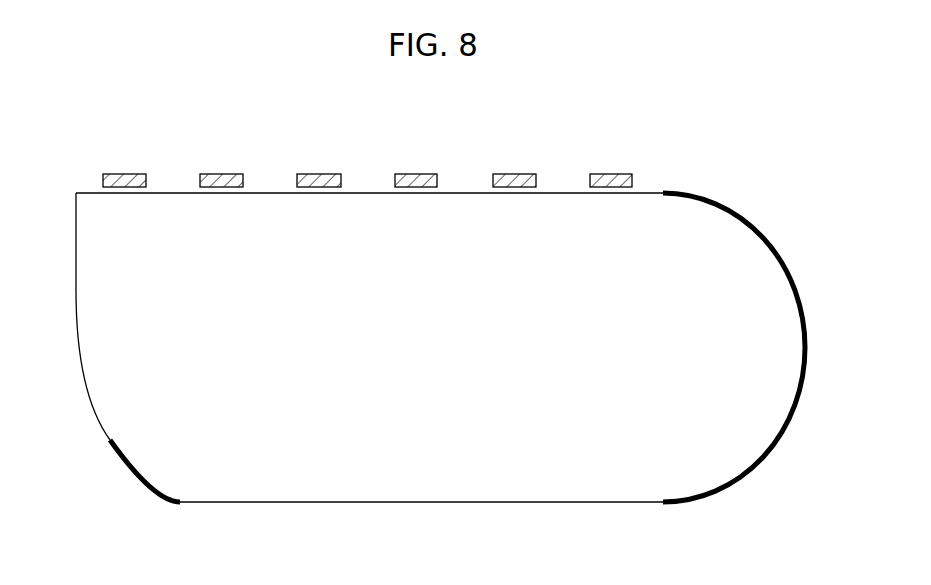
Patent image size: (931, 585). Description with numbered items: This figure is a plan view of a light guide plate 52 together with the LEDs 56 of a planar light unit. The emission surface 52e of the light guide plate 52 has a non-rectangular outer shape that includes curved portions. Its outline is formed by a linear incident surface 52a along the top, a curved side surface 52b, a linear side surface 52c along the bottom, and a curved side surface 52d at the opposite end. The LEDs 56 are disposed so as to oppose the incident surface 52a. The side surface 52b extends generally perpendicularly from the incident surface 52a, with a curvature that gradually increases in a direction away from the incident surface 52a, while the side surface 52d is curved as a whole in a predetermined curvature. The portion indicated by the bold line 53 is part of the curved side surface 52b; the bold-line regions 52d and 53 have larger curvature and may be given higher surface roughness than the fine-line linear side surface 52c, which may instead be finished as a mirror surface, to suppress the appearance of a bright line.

The light guide plate 52 is at (152, 134).
The incident surface 52a is at (370, 192).
The curved side surface 52b is at (76, 232).
The linear side surface 52c is at (345, 502).
The curved side surface 52d is at (785, 262).
The emission surface 52e is at (622, 294).
The bold line portion of curved side surface 53 is at (170, 517).
The LEDs 56 is at (410, 178).